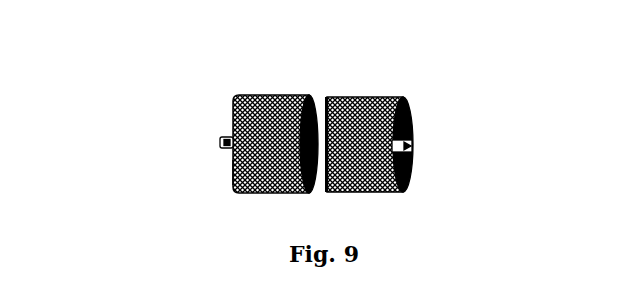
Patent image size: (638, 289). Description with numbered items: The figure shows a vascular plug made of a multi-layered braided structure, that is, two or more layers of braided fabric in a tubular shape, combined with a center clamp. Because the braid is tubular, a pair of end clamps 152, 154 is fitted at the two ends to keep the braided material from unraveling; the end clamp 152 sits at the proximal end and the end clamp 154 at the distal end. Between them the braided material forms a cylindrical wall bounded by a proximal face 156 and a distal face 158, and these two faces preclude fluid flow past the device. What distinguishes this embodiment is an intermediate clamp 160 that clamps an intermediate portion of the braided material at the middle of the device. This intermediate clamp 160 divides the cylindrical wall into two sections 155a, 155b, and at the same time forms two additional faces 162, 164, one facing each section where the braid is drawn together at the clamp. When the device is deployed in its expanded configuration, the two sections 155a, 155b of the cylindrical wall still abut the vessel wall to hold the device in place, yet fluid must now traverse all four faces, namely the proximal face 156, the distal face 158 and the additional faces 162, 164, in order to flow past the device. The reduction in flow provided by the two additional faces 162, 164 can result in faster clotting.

The end clamp 152 is at (220, 141).
The end clamp 154 is at (412, 145).
The cylindrical wall section 155a is at (214, 140).
The cylindrical wall section 155b is at (443, 124).
The proximal face 156 is at (232, 170).
The distal face 158 is at (405, 168).
The intermediate clamp 160 is at (318, 188).
The additional face 162 is at (318, 100).
The additional face 164 is at (328, 100).